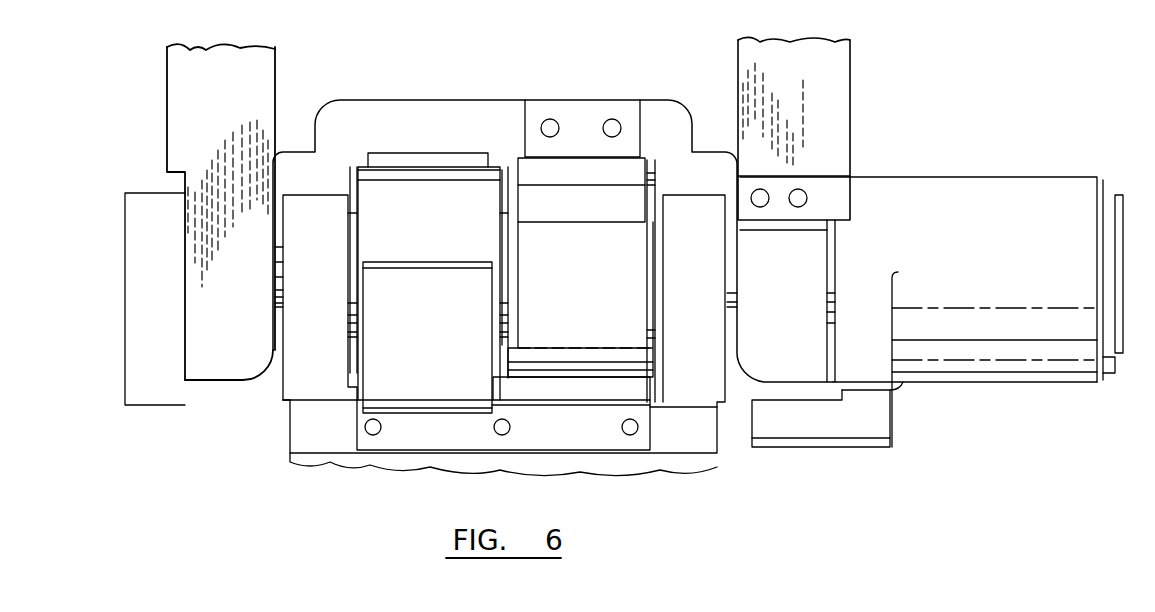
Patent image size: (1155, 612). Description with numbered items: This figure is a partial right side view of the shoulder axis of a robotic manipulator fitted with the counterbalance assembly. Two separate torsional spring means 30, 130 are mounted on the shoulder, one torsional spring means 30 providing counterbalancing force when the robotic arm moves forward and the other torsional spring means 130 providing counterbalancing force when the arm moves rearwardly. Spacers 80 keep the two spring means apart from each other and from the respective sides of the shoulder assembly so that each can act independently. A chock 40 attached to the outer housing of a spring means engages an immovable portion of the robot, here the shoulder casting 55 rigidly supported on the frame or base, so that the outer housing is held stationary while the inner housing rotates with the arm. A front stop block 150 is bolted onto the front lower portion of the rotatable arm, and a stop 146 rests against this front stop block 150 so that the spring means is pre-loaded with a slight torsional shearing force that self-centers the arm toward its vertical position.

The torsional spring means 30 is at (422, 197).
The chock 40 is at (383, 388).
The shoulder casting 55 is at (447, 432).
The spacers 80 is at (355, 218).
The torsional spring means 130 is at (588, 368).
The stop 146 is at (529, 168).
The front stop block 150 is at (580, 118).